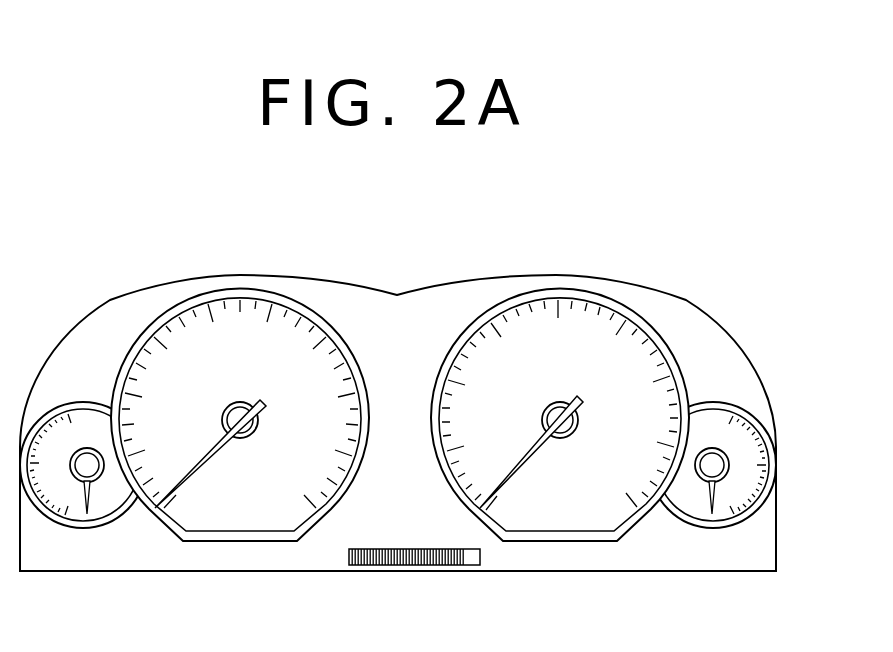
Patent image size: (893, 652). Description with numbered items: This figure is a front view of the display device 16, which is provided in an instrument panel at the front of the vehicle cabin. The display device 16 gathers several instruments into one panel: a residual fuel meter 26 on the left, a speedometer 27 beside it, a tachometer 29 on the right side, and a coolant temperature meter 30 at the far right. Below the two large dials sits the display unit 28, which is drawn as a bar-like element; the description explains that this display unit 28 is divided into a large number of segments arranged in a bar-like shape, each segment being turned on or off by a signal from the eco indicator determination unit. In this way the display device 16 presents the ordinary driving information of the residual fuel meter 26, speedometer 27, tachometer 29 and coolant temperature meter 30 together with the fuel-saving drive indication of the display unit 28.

The display device 16 is at (624, 267).
The residual fuel meter 26 is at (50, 520).
The speedometer 27 is at (160, 522).
The display unit 28 is at (420, 566).
The tachometer 29 is at (630, 533).
The coolant temperature meter 30 is at (725, 530).